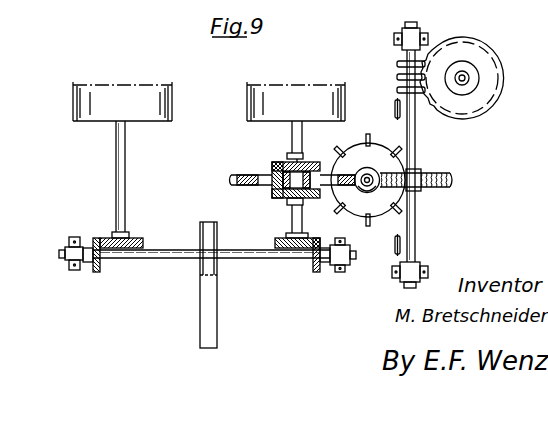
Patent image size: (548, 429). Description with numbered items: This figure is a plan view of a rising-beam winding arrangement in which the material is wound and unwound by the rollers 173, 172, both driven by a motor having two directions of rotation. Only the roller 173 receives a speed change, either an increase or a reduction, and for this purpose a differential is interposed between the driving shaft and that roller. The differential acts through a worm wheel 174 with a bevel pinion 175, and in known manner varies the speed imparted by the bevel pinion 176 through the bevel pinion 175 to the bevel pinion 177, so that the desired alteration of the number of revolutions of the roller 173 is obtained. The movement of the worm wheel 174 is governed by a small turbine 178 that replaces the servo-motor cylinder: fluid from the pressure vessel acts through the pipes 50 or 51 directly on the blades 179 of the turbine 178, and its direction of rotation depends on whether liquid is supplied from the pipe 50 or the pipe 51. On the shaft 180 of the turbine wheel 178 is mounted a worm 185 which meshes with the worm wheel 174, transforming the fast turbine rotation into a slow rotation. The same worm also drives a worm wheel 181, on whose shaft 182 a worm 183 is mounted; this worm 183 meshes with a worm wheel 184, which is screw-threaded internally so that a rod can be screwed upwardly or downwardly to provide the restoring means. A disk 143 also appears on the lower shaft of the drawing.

The pipe 50 is at (396, 250).
The pipe 51 is at (395, 114).
The disk 143 is at (214, 312).
The roller 172 is at (166, 110).
The roller 173 is at (256, 101).
The worm wheel 174 is at (234, 177).
The bevel pinion 175 is at (275, 166).
The bevel pinion 176 is at (280, 197).
The bevel pinion 177 is at (311, 162).
The turbine 178 is at (377, 211).
The blades 179 is at (344, 211).
The shaft 180 is at (378, 174).
The worm wheel 181 is at (424, 178).
The shaft 182 is at (416, 238).
The worm 183 is at (399, 73).
The worm wheel 184 is at (471, 45).
The worm 185 is at (373, 188).